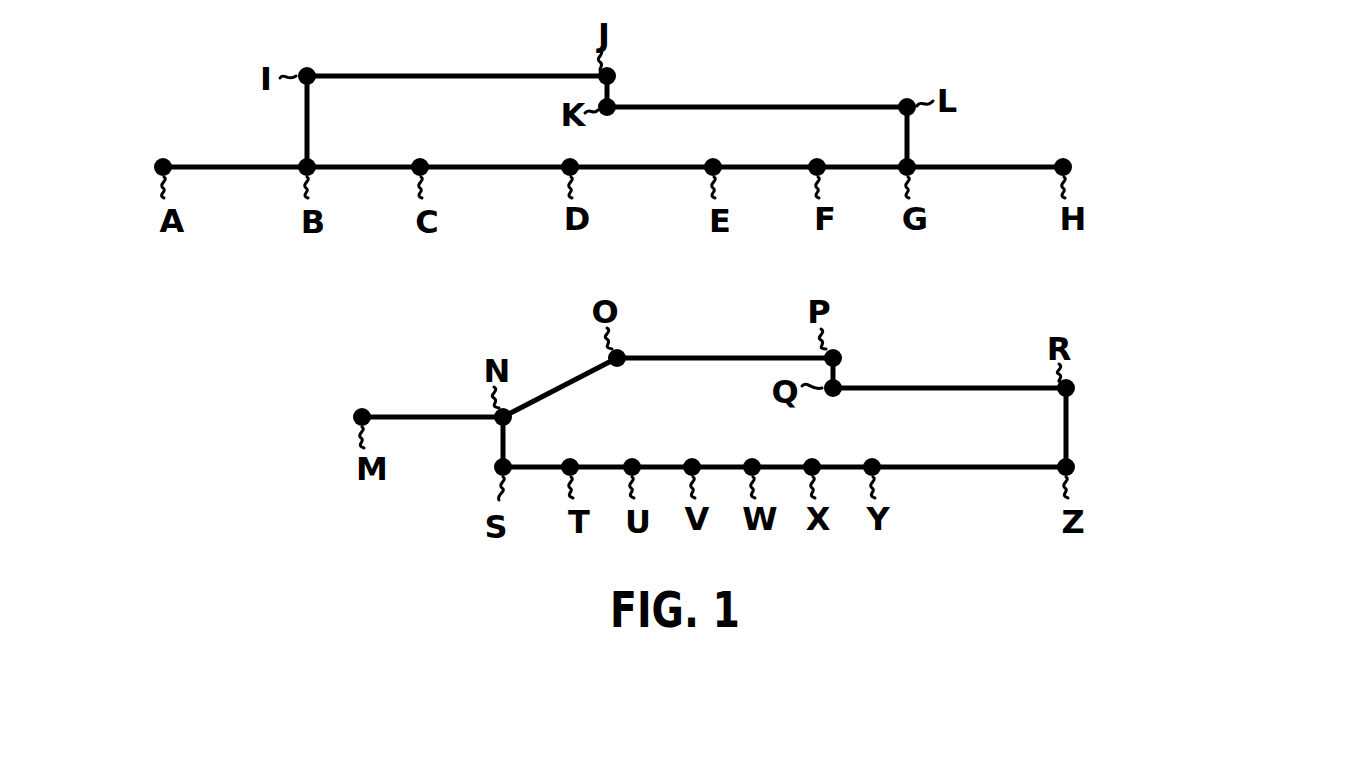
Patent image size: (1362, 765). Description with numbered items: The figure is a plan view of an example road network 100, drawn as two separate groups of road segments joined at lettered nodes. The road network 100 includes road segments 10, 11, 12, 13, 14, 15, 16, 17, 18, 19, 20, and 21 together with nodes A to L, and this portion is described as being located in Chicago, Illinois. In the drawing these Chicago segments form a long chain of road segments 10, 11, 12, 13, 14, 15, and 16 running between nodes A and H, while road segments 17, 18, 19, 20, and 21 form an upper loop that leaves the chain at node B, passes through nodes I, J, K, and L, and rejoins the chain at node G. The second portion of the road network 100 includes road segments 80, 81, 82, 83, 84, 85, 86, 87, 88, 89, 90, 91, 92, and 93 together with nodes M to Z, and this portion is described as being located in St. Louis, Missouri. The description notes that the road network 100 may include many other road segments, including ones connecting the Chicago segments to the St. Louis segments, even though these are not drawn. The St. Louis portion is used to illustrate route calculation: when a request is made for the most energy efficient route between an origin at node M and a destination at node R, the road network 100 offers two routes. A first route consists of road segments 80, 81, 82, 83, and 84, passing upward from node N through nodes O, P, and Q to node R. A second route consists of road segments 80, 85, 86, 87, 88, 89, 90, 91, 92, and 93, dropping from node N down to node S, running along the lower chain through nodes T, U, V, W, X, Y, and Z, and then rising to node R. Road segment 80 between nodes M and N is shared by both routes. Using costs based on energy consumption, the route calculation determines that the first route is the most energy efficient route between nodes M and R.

The road segment 10 is at (241, 173).
The road segment 11 is at (363, 173).
The road segment 12 is at (486, 173).
The road segment 13 is at (641, 173).
The road segment 14 is at (765, 173).
The road segment 15 is at (866, 173).
The road segment 16 is at (981, 173).
The road segment 17 is at (310, 128).
The road segment 18 is at (449, 74).
The road segment 19 is at (611, 88).
The road segment 20 is at (755, 106).
The road segment 21 is at (911, 141).
The road segment 80 is at (431, 412).
The road segment 81 is at (563, 375).
The road segment 82 is at (719, 353).
The road segment 83 is at (837, 370).
The road segment 84 is at (971, 384).
The road segment 85 is at (498, 447).
The road segment 86 is at (544, 465).
The road segment 87 is at (602, 465).
The road segment 88 is at (663, 465).
The road segment 89 is at (722, 465).
The road segment 90 is at (782, 465).
The road segment 91 is at (842, 465).
The road segment 92 is at (971, 464).
The road segment 93 is at (1070, 433).
The road network 100 is at (1200, 305).